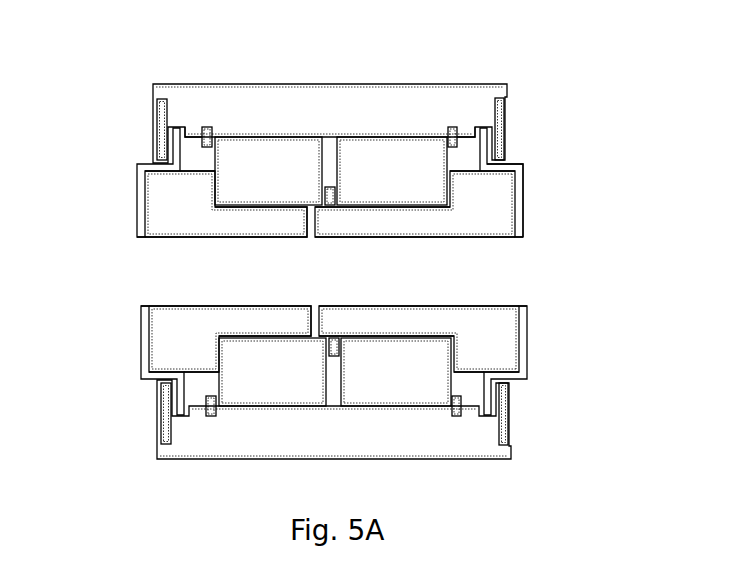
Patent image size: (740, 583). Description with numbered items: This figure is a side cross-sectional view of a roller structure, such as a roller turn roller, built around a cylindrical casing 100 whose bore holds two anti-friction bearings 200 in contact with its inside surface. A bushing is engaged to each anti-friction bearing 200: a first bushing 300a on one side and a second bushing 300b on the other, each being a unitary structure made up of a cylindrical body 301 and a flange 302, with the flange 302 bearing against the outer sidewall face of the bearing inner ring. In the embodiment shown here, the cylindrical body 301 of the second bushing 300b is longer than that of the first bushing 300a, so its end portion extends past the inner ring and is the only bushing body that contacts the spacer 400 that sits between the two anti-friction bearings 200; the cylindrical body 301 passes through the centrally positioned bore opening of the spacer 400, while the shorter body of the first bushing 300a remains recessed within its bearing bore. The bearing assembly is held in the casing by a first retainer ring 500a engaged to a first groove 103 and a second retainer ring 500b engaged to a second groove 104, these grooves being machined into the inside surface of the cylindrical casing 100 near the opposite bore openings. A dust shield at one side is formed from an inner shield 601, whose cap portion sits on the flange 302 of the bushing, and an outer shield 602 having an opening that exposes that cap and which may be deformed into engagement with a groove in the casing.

The cylindrical casing 100 is at (332, 271).
The first groove 103 is at (207, 127).
The second groove 104 is at (448, 125).
The anti-friction bearing 200 is at (333, 271).
The first bushing 300a is at (158, 204).
The second bushing 300b is at (503, 342).
The cylindrical body 301 is at (334, 271).
The flange 302 is at (332, 271).
The spacer 400 is at (335, 188).
The first retainer ring 500a is at (211, 127).
The second retainer ring 500b is at (458, 126).
The inner shield 601 is at (530, 178).
The outer shield 602 is at (505, 133).